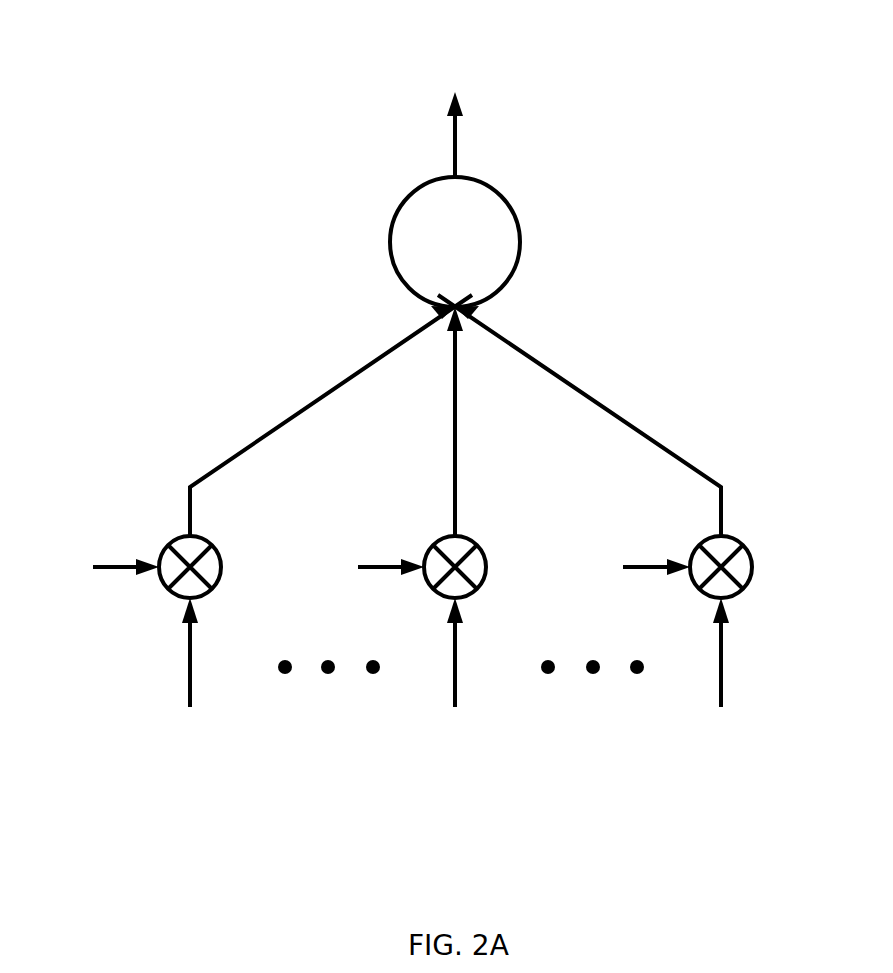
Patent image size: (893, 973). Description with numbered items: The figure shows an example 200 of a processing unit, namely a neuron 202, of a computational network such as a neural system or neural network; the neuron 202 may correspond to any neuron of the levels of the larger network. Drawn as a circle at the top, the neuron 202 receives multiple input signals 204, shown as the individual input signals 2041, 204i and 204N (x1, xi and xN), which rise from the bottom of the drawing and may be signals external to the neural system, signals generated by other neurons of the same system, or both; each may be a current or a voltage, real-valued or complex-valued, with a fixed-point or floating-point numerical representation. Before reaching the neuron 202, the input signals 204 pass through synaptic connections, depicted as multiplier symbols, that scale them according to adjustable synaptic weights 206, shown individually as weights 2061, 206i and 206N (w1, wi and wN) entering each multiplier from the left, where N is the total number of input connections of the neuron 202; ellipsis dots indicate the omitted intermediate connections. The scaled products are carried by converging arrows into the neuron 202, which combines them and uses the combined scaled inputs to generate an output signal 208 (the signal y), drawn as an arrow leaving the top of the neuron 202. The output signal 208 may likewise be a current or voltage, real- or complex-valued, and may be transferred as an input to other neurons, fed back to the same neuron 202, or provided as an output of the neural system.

The example of a processing unit 200 is at (636, 58).
The processing unit (neuron) 202 is at (522, 233).
The input signals 204 is at (475, 698).
The input signal x1 2041 is at (186, 759).
The input signal xi 204i is at (454, 758).
The input signal xN 204N is at (714, 759).
The adjustable synaptic weights 206 is at (397, 562).
The synaptic weight w1 2061 is at (62, 552).
The synaptic weight wi 206i is at (327, 552).
The synaptic weight wN 206N is at (582, 552).
The output signal 208 is at (454, 52).